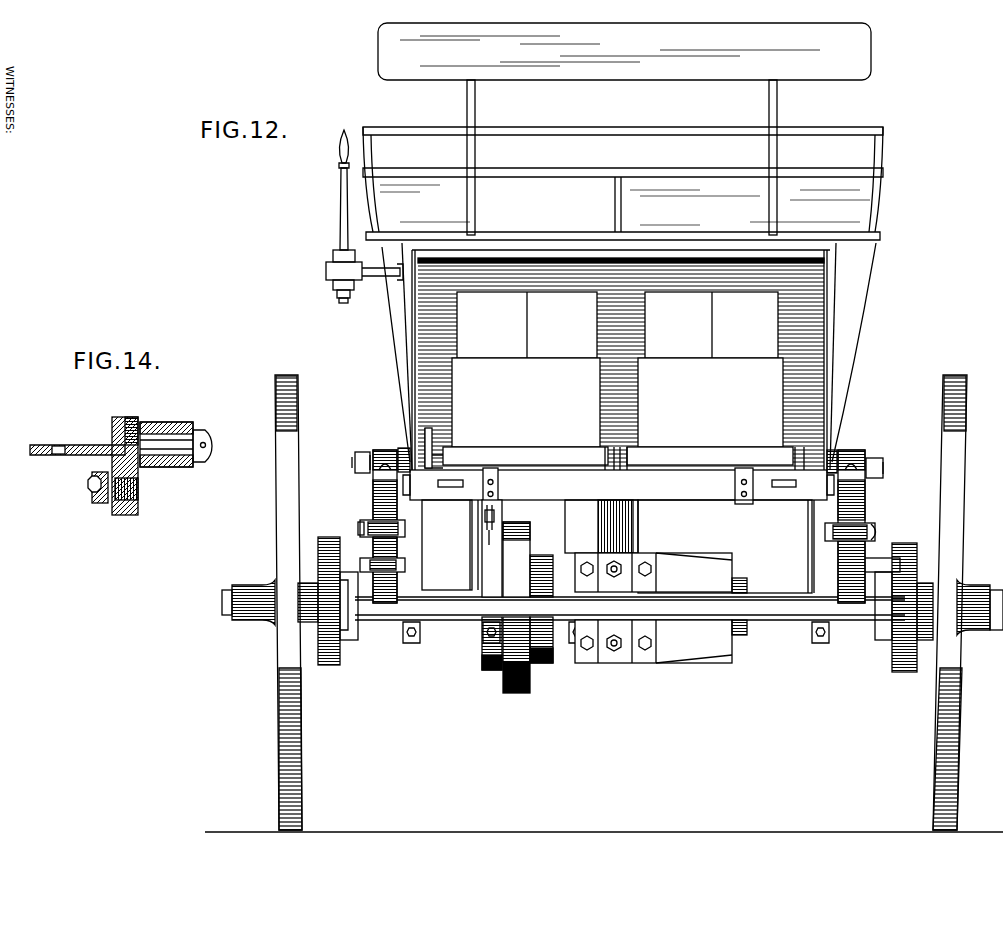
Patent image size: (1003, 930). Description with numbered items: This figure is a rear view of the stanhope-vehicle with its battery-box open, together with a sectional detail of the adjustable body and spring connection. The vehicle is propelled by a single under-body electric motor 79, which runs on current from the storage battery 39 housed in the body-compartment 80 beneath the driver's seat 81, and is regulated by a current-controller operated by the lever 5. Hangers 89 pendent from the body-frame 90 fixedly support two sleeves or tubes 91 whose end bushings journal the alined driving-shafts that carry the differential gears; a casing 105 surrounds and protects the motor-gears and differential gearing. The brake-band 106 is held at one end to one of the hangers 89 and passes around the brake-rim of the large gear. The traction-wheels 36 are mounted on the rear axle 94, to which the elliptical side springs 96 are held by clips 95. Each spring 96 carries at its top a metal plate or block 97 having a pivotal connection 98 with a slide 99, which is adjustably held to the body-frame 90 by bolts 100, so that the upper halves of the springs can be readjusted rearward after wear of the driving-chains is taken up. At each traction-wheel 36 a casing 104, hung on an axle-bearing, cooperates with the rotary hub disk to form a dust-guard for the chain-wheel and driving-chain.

In FIG. 12, the lever 5 is at (344, 238).
In FIG. 12, the traction-wheel 36 is at (614, 602).
In FIG. 12, the storage battery 39 is at (617, 369).
In FIG. 12, the under-body electric motor 79 is at (661, 608).
In FIG. 12, the body-compartment 80 is at (797, 348).
In FIG. 12, the driver's seat 81 is at (624, 129).
In FIG. 12, the hanger 89 is at (475, 507).
In FIG. 12, the body-frame 90 is at (618, 486).
In FIG. 14, the body-frame 90 is at (102, 445).
In FIG. 12, the sleeve or tube 91 is at (455, 610).
In FIG. 12, the rear axle 94 is at (550, 605).
In FIG. 12, the clip 95 is at (395, 600).
In FIG. 12, the elliptical side spring 96 is at (380, 514).
In FIG. 12, the metal plate or block 97 is at (380, 449).
In FIG. 14, the metal plate or block 97 is at (165, 456).
In FIG. 12, the pivotal connection 98 is at (352, 463).
In FIG. 14, the pivotal connection 98 is at (176, 424).
In FIG. 12, the slide 99 is at (404, 447).
In FIG. 14, the slide 99 is at (137, 500).
In FIG. 14, the bolt 100 is at (92, 484).
In FIG. 12, the casing 104 is at (328, 662).
In FIG. 12, the casing 105 is at (541, 690).
In FIG. 12, the brake-band 106 is at (488, 578).